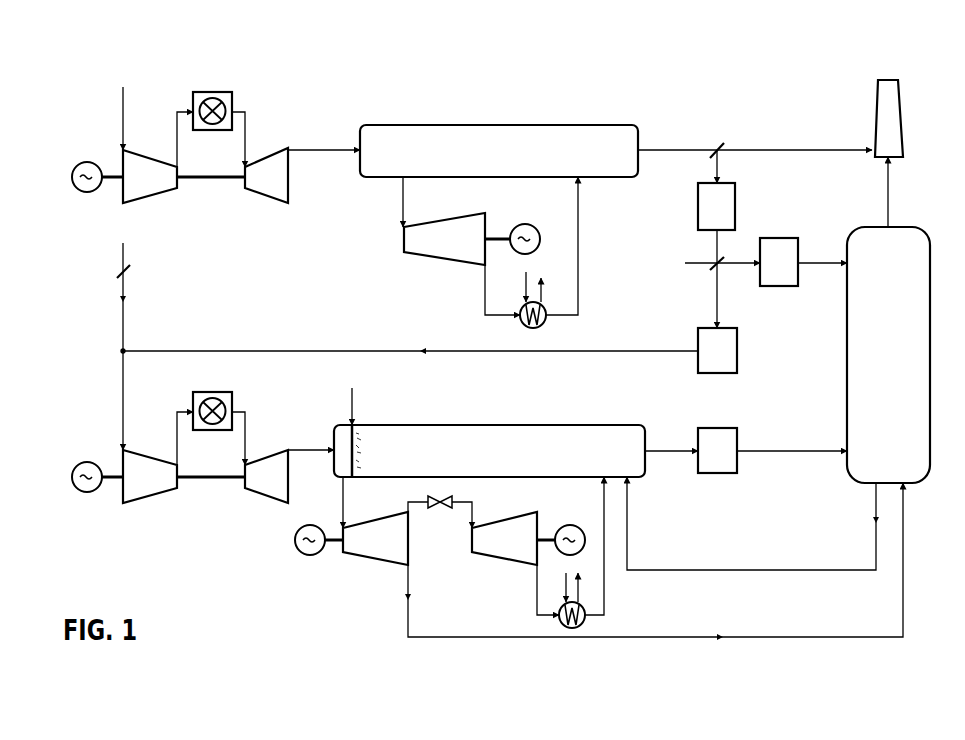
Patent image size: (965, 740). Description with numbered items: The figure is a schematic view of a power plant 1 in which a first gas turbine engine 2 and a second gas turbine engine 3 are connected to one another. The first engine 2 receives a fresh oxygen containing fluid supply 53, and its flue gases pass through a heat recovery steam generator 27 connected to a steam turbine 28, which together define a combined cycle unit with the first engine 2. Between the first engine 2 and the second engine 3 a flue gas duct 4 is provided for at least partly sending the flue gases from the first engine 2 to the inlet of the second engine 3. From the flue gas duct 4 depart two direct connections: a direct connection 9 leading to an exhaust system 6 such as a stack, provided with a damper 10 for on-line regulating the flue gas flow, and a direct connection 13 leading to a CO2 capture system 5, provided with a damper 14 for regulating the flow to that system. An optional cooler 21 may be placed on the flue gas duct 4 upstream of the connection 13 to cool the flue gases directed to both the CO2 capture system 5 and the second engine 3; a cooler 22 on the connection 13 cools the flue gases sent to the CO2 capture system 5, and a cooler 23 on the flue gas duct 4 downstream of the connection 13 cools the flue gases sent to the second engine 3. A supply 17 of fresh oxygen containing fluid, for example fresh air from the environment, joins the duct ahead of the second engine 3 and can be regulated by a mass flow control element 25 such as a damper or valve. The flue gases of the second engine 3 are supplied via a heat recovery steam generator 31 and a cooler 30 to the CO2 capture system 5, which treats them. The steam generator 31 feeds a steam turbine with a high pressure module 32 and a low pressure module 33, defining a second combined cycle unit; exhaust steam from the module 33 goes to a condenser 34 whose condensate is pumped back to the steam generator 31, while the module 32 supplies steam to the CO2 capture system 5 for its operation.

The power plant 1 is at (473, 110).
The first gas turbine engine 2 is at (209, 207).
The second gas turbine engine 3 is at (209, 507).
The flue gas duct 4 is at (711, 170).
The CO2 capture system 5 is at (882, 330).
The exhaust system 6 is at (887, 115).
The direct connection 9 is at (800, 148).
The damper 10 is at (718, 142).
The direct connection 13 is at (821, 266).
The damper 14 is at (708, 264).
The supply of fresh oxygen containing fluid 17 is at (121, 322).
The cooler 21 is at (708, 214).
The cooler 22 is at (770, 270).
The cooler 23 is at (708, 359).
The mass flow control element 25 is at (118, 273).
The heat recovery steam generator 27 is at (490, 158).
The steam turbine 28 is at (438, 247).
The cooler 30 is at (708, 459).
The heat recovery steam generator 31 is at (489, 458).
The high pressure module 32 is at (369, 547).
The low pressure module 33 is at (494, 547).
The condenser 34 is at (586, 623).
The fresh oxygen containing fluid supply 53 is at (122, 103).